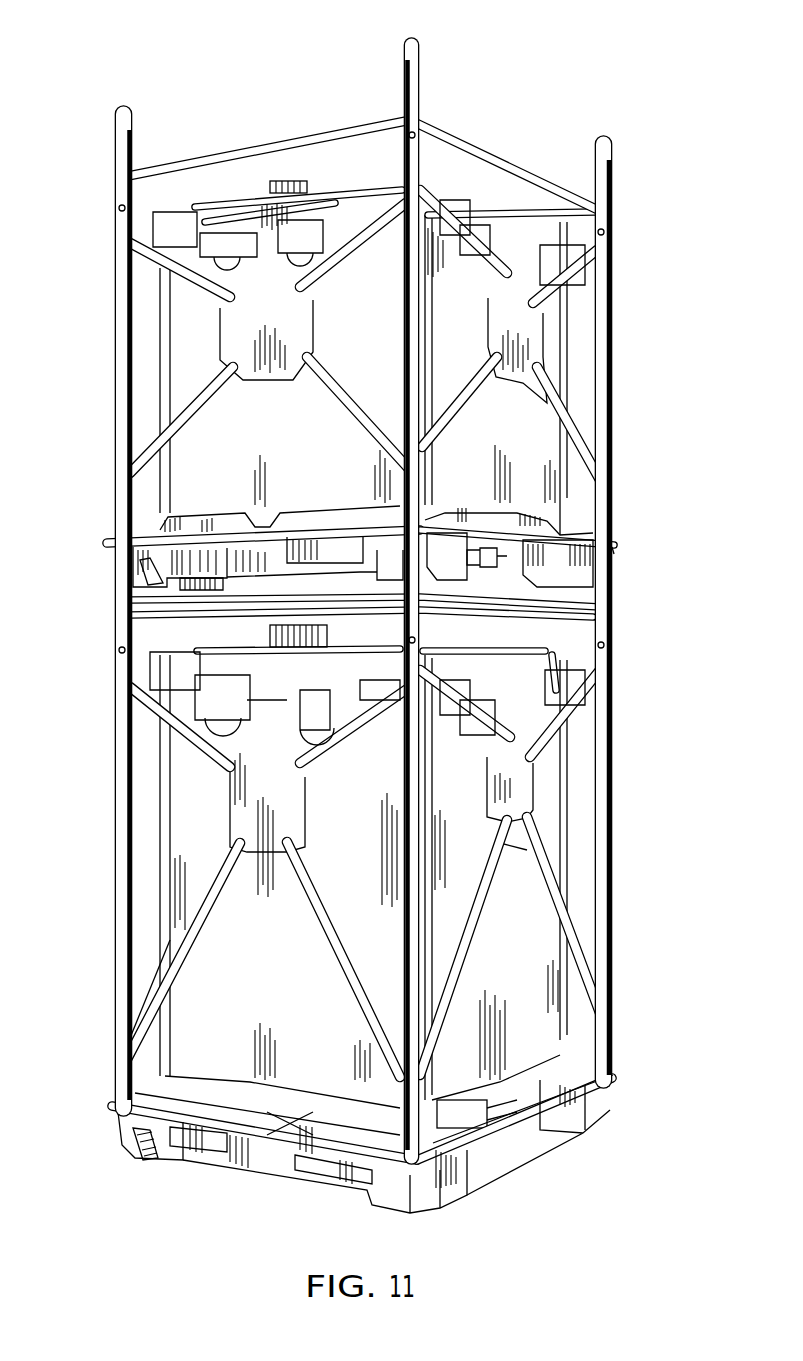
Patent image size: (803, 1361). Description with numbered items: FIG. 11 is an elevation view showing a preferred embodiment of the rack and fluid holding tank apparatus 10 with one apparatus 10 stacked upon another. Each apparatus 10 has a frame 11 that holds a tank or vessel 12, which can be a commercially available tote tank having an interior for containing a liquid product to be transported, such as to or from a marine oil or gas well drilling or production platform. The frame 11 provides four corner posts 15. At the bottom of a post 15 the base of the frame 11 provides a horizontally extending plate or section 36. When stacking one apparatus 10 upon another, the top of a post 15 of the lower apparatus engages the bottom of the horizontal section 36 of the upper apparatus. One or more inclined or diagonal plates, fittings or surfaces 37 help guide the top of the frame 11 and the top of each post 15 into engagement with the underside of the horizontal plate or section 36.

The rack and fluid holding tank apparatus 10 is at (375, 609).
The frame 11 is at (604, 355).
The tank or vessel 12 is at (168, 333).
The corner post 15 is at (119, 256).
The horizontally extending plate or section 36 is at (398, 522).
The inclined or diagonal plate, fitting or surface 37 is at (598, 581).